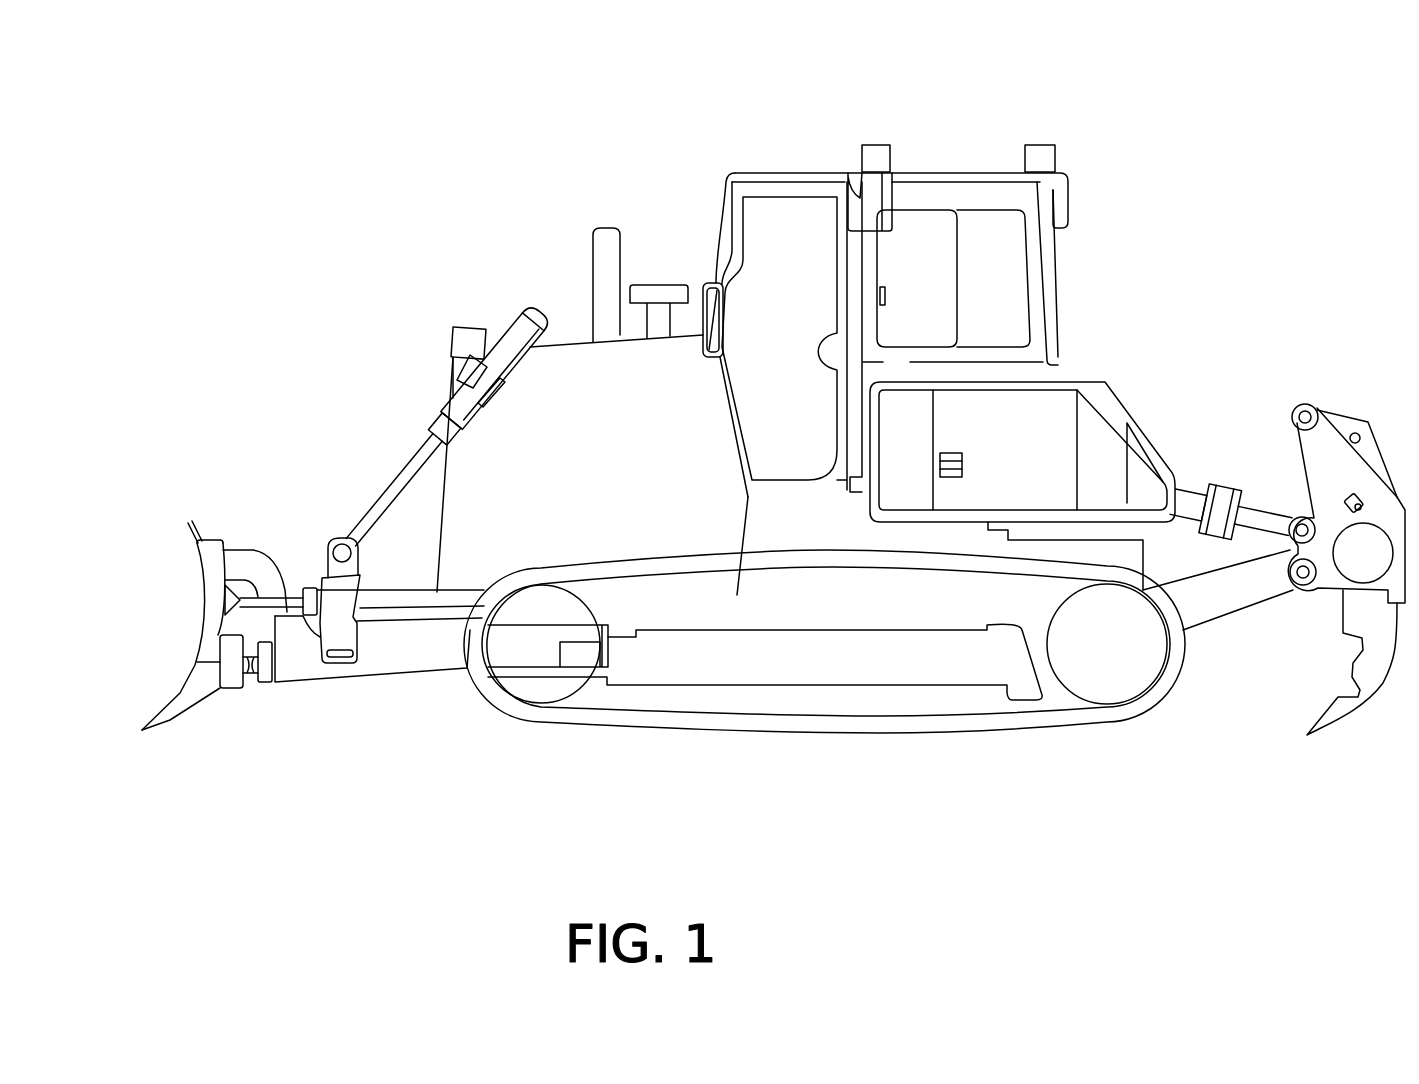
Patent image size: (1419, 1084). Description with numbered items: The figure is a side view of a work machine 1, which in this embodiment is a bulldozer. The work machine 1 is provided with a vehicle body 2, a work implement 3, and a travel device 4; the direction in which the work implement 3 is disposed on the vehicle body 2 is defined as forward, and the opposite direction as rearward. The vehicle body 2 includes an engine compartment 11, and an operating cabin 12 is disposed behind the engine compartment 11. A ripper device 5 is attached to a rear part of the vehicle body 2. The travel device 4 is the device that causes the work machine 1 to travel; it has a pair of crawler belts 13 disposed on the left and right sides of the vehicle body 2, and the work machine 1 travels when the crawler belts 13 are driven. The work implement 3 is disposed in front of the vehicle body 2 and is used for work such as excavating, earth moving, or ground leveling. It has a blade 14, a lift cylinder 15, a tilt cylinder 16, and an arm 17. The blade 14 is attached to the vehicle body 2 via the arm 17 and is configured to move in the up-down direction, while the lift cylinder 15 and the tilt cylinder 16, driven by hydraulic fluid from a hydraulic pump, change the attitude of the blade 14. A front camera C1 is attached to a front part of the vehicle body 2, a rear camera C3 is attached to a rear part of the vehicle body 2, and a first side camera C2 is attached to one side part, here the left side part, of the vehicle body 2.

The work machine 1 is at (1236, 129).
The vehicle body 2 is at (936, 151).
The work implement 3 is at (208, 494).
The travel device 4 is at (830, 756).
The ripper device 5 is at (1338, 392).
The engine compartment 11 is at (577, 375).
The operating cabin 12 is at (803, 173).
The crawler belt 13 is at (933, 735).
The blade 14 is at (205, 618).
The lift cylinder 15 is at (402, 463).
The tilt cylinder 16 is at (415, 598).
The arm 17 is at (388, 668).
The front camera C1 is at (465, 337).
The first side camera C2 is at (877, 150).
The rear camera C3 is at (1058, 153).